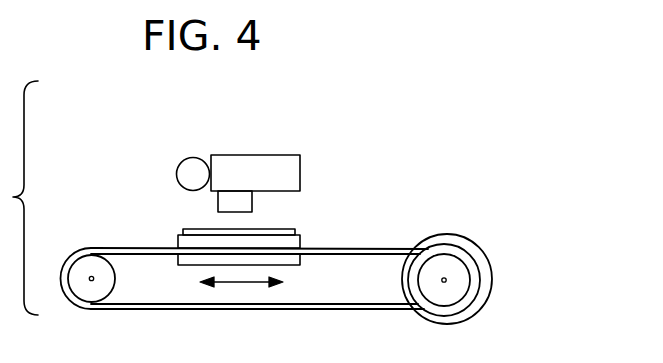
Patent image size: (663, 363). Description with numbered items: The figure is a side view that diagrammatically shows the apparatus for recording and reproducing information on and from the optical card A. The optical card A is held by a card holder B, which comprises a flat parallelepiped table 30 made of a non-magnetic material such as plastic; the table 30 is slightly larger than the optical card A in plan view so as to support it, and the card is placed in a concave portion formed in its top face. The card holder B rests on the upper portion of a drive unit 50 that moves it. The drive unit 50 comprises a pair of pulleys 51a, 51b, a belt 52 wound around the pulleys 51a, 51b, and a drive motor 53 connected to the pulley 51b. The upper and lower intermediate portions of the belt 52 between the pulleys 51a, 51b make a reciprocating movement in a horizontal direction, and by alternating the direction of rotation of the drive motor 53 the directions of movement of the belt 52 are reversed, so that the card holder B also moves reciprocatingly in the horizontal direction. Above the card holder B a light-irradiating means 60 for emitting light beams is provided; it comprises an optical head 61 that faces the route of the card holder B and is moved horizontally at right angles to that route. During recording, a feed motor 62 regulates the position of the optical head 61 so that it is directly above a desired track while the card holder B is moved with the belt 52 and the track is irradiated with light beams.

The table 30 is at (219, 218).
The optical card A is at (297, 226).
The card holder B is at (282, 229).
The drive unit 50 is at (298, 263).
The pulley 51a is at (86, 295).
The pulley 51b is at (452, 285).
The belt 52 is at (357, 248).
The drive motor 53 is at (458, 232).
The light-irradiating means 60 is at (249, 136).
The optical head 61 is at (288, 170).
The feed motor 62 is at (186, 157).